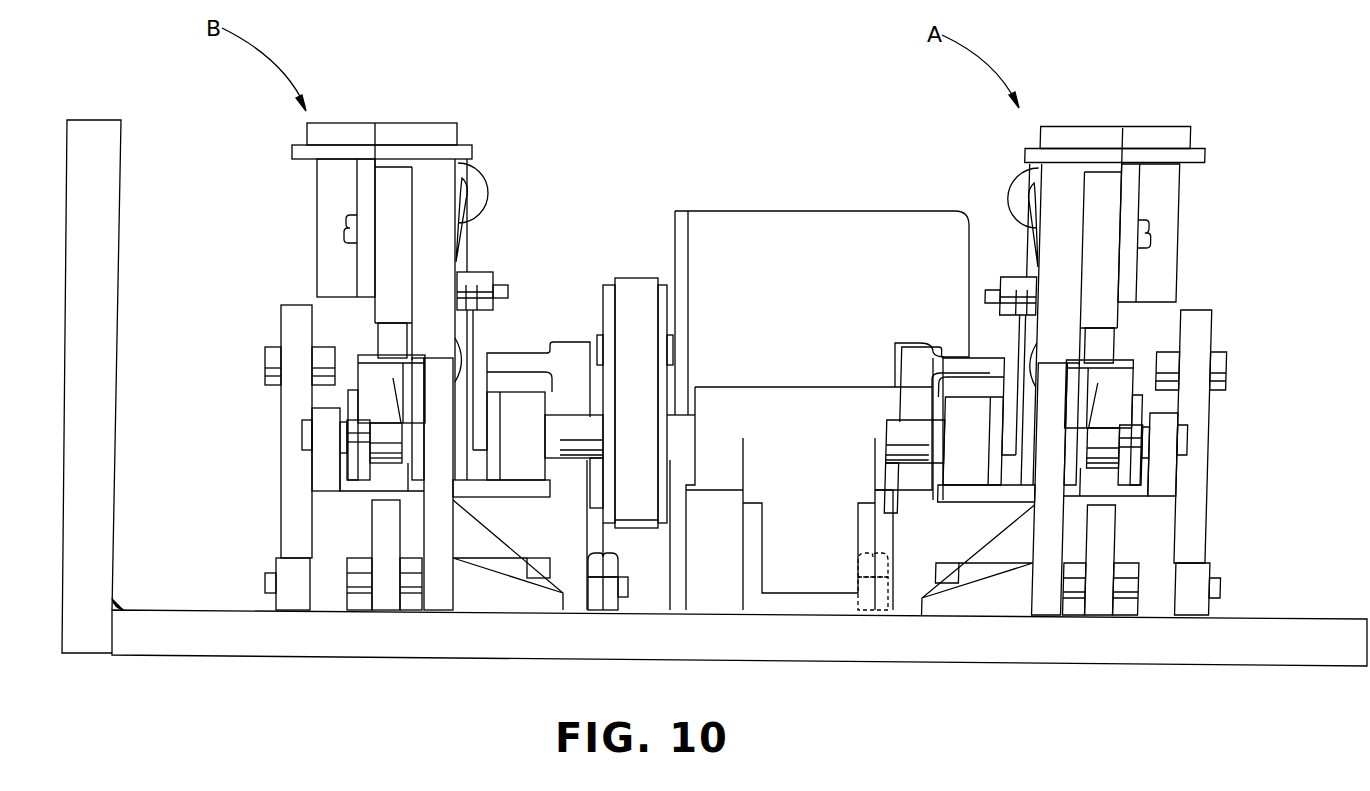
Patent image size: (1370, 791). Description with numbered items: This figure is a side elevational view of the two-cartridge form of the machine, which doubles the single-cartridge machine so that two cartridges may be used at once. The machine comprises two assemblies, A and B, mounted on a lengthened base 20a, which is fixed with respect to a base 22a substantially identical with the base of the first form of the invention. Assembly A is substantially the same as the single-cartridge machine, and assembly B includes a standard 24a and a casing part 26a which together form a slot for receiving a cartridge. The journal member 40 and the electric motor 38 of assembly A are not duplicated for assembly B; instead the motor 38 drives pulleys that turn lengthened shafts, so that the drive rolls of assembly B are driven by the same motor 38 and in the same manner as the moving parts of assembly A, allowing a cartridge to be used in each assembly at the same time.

The base 20a is at (262, 656).
The base 22a is at (97, 120).
The standard 24a is at (478, 157).
The casing part 26a is at (290, 153).
The electric motor 38 is at (725, 211).
The journal member 40 is at (818, 438).